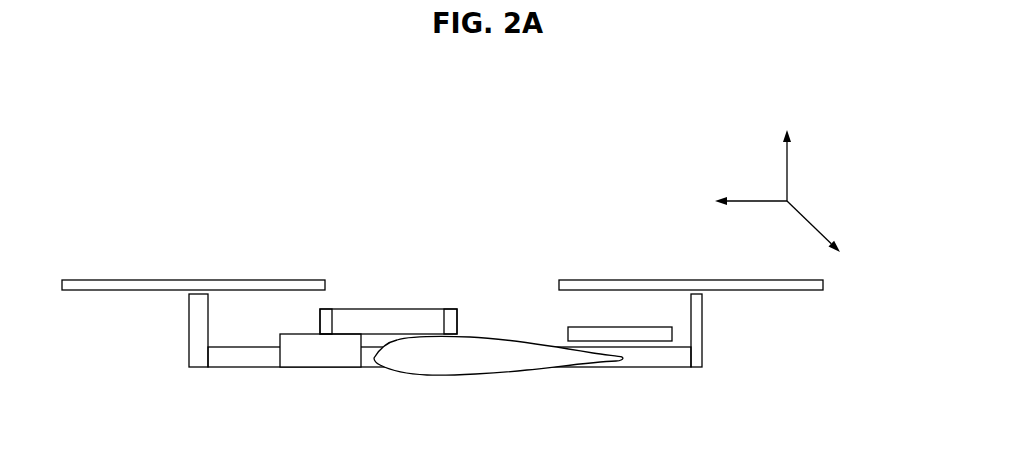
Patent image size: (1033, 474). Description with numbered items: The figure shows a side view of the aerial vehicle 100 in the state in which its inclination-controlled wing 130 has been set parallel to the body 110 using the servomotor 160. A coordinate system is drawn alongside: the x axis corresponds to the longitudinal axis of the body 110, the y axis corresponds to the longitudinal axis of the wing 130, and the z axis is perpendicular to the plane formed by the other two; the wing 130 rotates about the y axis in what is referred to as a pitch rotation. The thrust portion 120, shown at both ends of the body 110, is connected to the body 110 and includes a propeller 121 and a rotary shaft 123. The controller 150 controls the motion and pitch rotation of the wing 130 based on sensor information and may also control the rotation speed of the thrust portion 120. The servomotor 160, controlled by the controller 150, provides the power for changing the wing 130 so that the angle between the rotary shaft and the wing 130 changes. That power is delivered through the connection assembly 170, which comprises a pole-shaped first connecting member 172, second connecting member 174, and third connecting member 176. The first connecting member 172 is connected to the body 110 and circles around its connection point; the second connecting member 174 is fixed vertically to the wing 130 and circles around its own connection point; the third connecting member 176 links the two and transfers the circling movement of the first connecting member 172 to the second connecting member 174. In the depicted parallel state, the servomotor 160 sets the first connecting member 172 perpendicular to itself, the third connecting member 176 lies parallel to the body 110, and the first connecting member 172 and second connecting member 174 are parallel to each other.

The aerial vehicle 100 is at (470, 131).
The body 110 is at (650, 362).
The thrust portion 120 is at (142, 379).
The propeller 121 is at (147, 282).
The rotary shaft 123 is at (193, 337).
The wing 130 is at (465, 371).
The controller 150 is at (621, 327).
The servomotor 160 is at (322, 357).
The connection assembly 170 is at (520, 235).
The first connecting member 172 is at (328, 308).
The second connecting member 174 is at (455, 308).
The third connecting member 176 is at (392, 308).